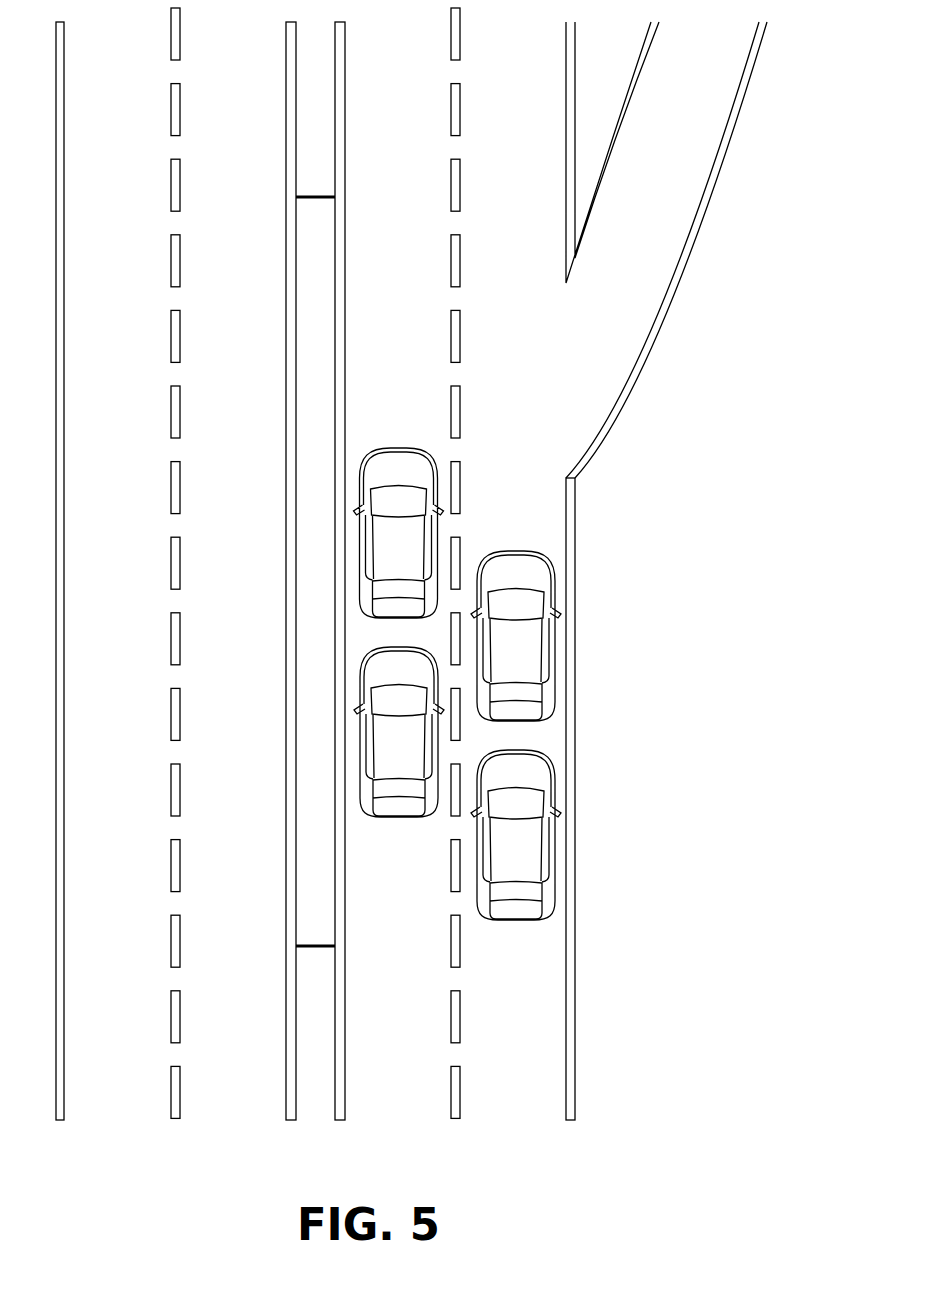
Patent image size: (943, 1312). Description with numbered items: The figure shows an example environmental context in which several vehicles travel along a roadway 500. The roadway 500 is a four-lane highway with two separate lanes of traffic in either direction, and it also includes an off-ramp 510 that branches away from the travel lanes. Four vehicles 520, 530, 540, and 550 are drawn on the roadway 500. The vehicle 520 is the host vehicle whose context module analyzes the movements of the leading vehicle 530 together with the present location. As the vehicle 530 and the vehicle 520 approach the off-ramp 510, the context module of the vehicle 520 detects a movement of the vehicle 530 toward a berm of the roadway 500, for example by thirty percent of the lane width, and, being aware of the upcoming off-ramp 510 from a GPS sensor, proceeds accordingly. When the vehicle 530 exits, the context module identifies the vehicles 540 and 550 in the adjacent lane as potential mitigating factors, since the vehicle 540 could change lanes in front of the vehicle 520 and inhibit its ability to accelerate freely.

The roadway 500 is at (673, 903).
The off-ramp 510 is at (680, 272).
The vehicle 520 is at (518, 920).
The vehicle 530 is at (552, 633).
The vehicle 540 is at (367, 547).
The vehicle 550 is at (400, 818).